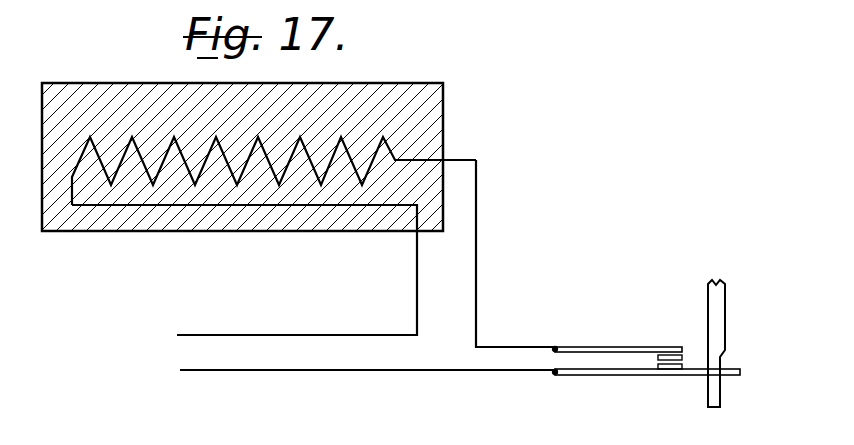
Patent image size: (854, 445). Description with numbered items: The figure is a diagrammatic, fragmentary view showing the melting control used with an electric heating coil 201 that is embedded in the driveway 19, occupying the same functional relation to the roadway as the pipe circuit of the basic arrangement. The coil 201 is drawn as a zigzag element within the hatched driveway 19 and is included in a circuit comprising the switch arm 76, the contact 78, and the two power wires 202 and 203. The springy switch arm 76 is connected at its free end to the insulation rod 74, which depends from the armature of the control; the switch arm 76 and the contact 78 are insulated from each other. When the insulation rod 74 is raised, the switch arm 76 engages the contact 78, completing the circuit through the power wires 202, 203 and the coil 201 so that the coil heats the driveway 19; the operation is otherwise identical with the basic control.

The driveway 19 is at (55, 83).
The electric heating coil 201 is at (383, 137).
The power wire 202 is at (287, 308).
The power wire 203 is at (272, 373).
The insulation rod 74 is at (722, 303).
The switch arm 76 is at (668, 378).
The contact 78 is at (682, 349).